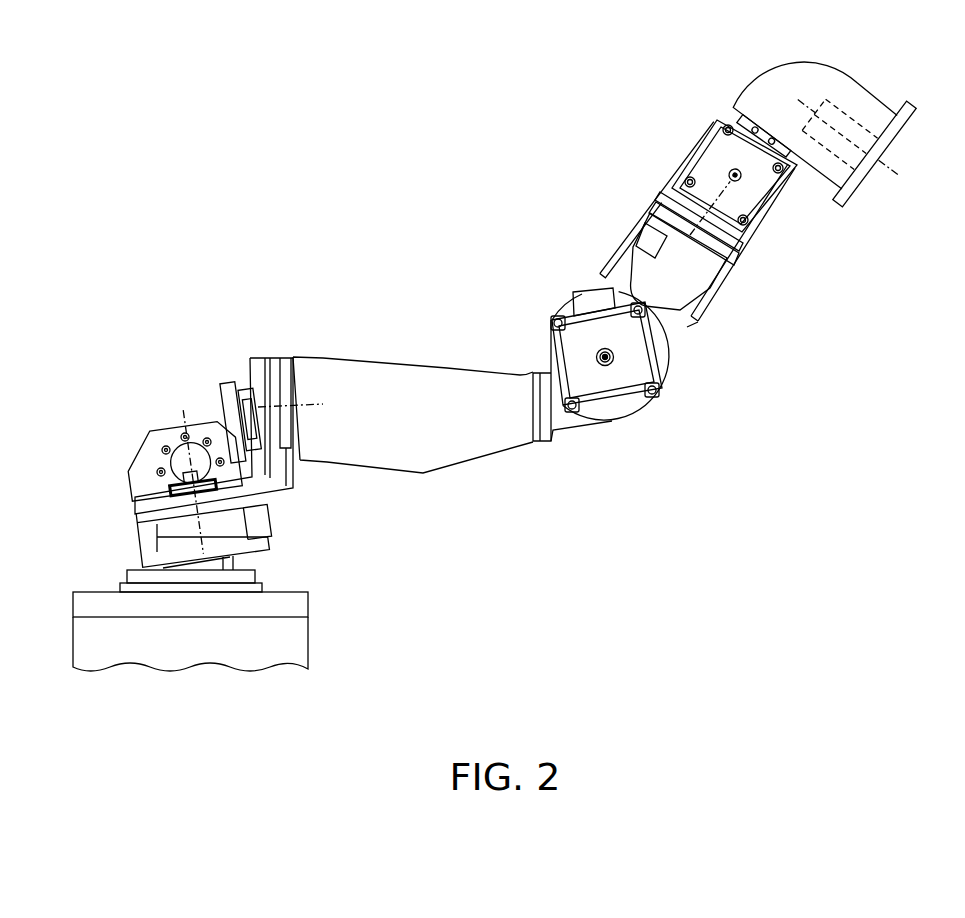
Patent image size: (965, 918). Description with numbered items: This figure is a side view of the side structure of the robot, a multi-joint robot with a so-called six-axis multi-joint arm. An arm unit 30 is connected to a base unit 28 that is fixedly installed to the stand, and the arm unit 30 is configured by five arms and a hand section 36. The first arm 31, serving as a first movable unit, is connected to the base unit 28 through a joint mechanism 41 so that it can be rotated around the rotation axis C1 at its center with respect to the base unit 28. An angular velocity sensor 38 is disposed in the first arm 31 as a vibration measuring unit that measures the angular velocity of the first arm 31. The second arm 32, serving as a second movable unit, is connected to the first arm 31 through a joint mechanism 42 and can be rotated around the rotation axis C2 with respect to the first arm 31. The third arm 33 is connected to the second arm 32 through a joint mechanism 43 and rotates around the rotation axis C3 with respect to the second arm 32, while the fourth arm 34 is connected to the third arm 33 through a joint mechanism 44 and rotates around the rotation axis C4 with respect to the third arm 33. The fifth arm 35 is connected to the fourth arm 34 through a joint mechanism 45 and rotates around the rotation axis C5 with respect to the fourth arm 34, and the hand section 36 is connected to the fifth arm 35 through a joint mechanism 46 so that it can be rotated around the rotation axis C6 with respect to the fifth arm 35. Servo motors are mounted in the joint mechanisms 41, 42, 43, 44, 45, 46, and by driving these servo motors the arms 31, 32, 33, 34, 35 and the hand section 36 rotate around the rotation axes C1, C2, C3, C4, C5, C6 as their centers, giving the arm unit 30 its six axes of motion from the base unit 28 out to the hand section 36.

The base unit 28 is at (306, 637).
The arm unit 30 is at (497, 462).
The first arm 31 is at (292, 485).
The second arm 32 is at (518, 380).
The third arm 33 is at (682, 322).
The fourth arm 34 is at (757, 223).
The fifth arm 35 is at (825, 68).
The hand section 36 is at (853, 192).
The angular velocity sensor 38 is at (236, 386).
The joint mechanism 41 is at (160, 532).
The joint mechanism 42 is at (262, 402).
The joint mechanism 43 is at (623, 397).
The joint mechanism 44 is at (712, 252).
The joint mechanism 45 is at (760, 193).
The joint mechanism 46 is at (868, 98).
The rotation axis C1 is at (182, 414).
The rotation axis C2 is at (313, 405).
The rotation axis C3 is at (606, 348).
The rotation axis C4 is at (657, 223).
The rotation axis C5 is at (735, 170).
The rotation axis C6 is at (898, 172).